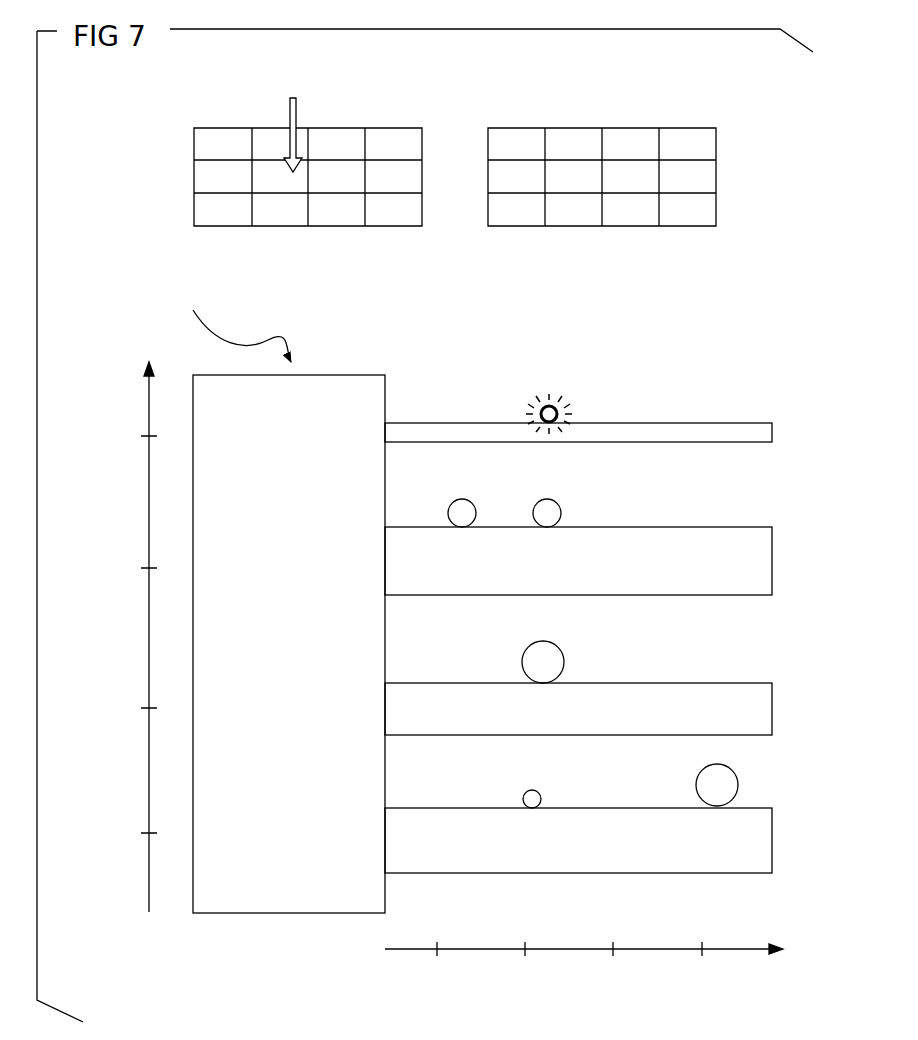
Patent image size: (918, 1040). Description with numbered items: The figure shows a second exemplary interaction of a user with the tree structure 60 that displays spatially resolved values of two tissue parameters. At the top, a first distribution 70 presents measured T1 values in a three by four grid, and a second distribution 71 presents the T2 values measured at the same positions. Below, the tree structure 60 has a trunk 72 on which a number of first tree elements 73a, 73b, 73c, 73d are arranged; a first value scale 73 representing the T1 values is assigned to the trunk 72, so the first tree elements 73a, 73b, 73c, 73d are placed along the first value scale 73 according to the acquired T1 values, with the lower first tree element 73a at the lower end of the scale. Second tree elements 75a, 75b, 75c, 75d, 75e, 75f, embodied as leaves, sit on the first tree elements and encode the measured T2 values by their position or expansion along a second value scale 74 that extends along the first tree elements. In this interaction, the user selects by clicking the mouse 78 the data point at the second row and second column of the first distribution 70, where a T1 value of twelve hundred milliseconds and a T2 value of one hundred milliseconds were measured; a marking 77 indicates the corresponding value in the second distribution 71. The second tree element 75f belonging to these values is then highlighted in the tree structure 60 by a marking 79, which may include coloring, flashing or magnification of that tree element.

The tree structure 60 is at (366, 342).
The first distribution 70 is at (343, 109).
The second distribution 71 is at (637, 106).
The trunk 72 is at (290, 913).
The first value scale 73 is at (149, 393).
The first tree element 73a is at (757, 808).
The first tree element 73b is at (757, 683).
The first tree element 73c is at (703, 527).
The first tree element 73d is at (703, 423).
The second value scale 74 is at (748, 950).
The second tree element 75a is at (523, 797).
The second tree element 75b is at (697, 782).
The second tree element 75c is at (522, 660).
The second tree element 75d is at (476, 508).
The second tree element 75e is at (561, 508).
The second tree element 75f is at (556, 404).
The marking 77 is at (572, 128).
The mouse 78 is at (290, 104).
The marking 79 is at (535, 382).